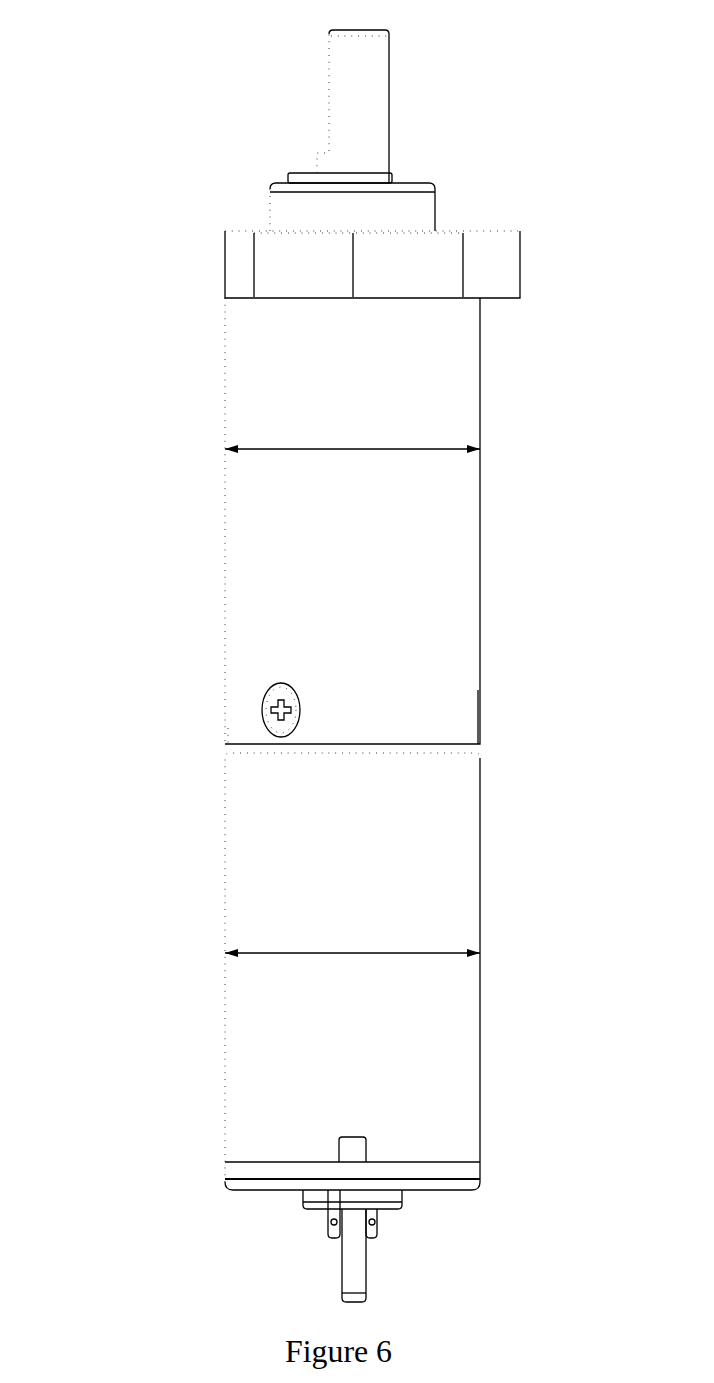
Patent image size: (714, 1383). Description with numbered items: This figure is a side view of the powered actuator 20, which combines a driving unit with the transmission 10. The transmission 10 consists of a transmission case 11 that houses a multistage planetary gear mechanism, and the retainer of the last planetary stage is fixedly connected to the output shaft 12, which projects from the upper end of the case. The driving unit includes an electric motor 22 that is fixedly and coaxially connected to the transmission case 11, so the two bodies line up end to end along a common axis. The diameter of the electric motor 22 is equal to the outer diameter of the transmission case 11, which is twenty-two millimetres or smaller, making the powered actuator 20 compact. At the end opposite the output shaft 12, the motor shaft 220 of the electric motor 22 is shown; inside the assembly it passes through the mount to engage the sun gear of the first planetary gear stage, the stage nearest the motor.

The powered actuator 20 is at (100, 22).
The output shaft 12 is at (377, 107).
The transmission 10 is at (492, 511).
The transmission case 11 is at (466, 650).
The electric motor 22 is at (469, 1048).
The motor shaft 220 is at (367, 1260).